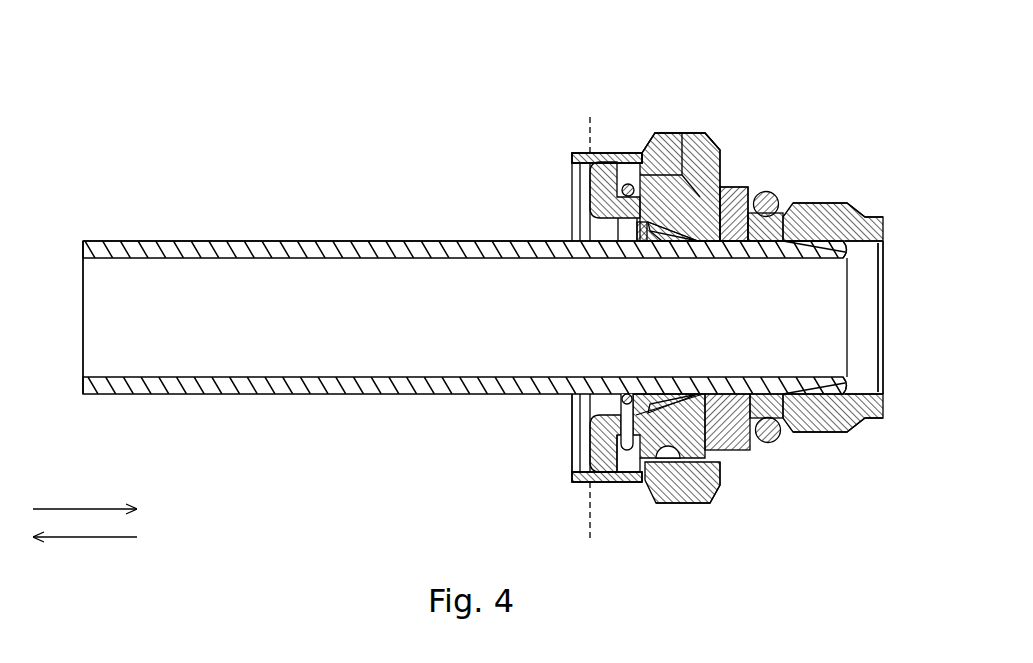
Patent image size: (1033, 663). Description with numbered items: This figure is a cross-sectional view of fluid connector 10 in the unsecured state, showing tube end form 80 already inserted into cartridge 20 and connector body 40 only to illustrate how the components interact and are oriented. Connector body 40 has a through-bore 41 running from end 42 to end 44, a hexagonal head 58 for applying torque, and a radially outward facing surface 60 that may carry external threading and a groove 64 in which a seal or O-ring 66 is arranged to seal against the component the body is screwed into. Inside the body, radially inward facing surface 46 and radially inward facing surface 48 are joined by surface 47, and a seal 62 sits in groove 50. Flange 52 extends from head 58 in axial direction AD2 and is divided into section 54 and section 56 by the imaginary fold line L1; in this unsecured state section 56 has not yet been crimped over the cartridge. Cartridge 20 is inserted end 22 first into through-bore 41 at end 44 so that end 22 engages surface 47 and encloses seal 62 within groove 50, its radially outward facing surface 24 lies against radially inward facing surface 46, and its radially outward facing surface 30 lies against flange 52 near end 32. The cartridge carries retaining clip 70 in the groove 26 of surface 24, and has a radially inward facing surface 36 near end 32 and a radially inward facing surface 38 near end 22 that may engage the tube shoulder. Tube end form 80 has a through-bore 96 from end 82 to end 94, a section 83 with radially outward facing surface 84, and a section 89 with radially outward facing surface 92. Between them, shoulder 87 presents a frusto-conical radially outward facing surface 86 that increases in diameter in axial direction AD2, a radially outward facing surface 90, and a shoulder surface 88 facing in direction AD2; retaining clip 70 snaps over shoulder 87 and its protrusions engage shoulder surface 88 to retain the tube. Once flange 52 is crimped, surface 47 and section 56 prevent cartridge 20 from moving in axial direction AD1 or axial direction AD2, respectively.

The fluid connector 10 is at (131, 68).
The cartridge 20 is at (600, 432).
The end 22 is at (705, 133).
The radially outward facing surface 24 is at (674, 472).
The radially outward facing groove 26 is at (627, 481).
The radially outward facing surface 30 is at (597, 153).
The end 32 is at (597, 450).
The radially inward facing surface 36 is at (612, 228).
The radially inward facing surface 38 is at (677, 167).
The connector body 40 is at (843, 203).
The through-bore 41 is at (857, 306).
The end 42 is at (884, 410).
The end 44 is at (573, 158).
The radially inward facing surface 46 is at (697, 503).
The surface 47 is at (719, 450).
The radially inward facing surface 48 is at (838, 418).
The groove 50 is at (724, 213).
The flange 52 is at (607, 481).
The section 54 is at (630, 148).
The section 56 is at (578, 148).
The head 58 is at (686, 133).
The radially outward facing surface 60 is at (825, 203).
The seal 62 is at (728, 225).
The groove 64 is at (776, 193).
The ball 66 is at (767, 443).
The retaining clip 70 is at (598, 185).
The tube end form 80 is at (342, 240).
The end 82 is at (848, 249).
The section 83 is at (793, 432).
The radially outward facing surface 84 is at (803, 213).
The radially outward facing surface 86 is at (698, 244).
The shoulder 87 is at (648, 402).
The shoulder surface 88 is at (647, 242).
The section 89 is at (236, 413).
The radially outward facing surface 90 is at (669, 246).
The radially outward facing surface 92 is at (237, 240).
The end 94 is at (83, 386).
The through-bore 96 is at (118, 318).
The axial direction AD1 is at (65, 509).
The axial direction AD2 is at (83, 537).
The fold line L1 is at (587, 494).